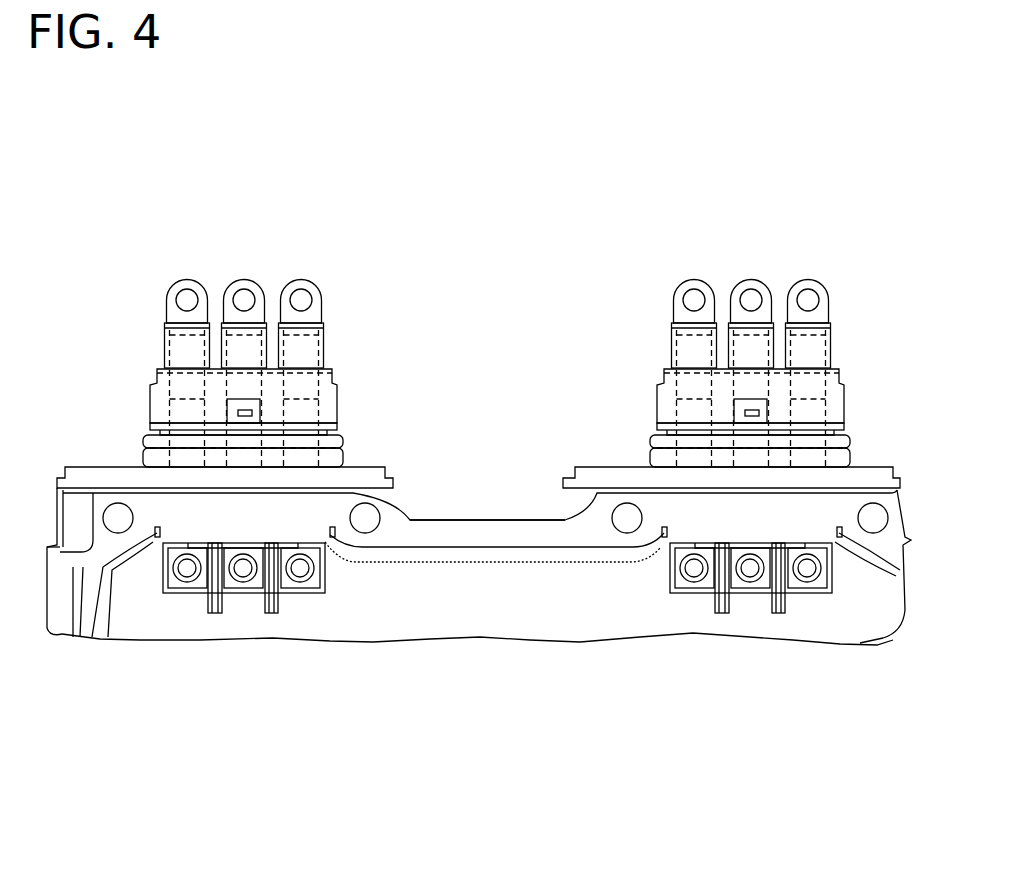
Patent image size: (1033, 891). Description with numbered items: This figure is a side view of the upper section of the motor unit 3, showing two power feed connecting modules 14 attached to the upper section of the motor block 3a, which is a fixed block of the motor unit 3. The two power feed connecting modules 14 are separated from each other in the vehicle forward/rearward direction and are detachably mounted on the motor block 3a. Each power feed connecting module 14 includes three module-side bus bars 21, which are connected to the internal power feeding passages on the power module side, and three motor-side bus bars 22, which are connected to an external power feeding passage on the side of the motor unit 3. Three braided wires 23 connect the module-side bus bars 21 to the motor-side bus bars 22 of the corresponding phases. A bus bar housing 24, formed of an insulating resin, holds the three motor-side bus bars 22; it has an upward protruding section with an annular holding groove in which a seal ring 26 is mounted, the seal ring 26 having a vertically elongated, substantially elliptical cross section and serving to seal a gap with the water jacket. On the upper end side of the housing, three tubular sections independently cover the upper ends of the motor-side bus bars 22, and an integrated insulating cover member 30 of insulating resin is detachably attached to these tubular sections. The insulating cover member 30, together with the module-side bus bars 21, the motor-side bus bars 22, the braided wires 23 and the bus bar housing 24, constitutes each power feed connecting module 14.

The motor unit 3 is at (512, 637).
The motor block 3a is at (490, 525).
The power feed connecting module 14 is at (509, 325).
The module-side bus bar 21 is at (192, 282).
The motor-side bus bar 22 is at (175, 552).
The braided wire 23 is at (225, 353).
The bus bar housing 24 is at (128, 470).
The seal ring 26 is at (337, 450).
The insulating cover member 30 is at (342, 387).